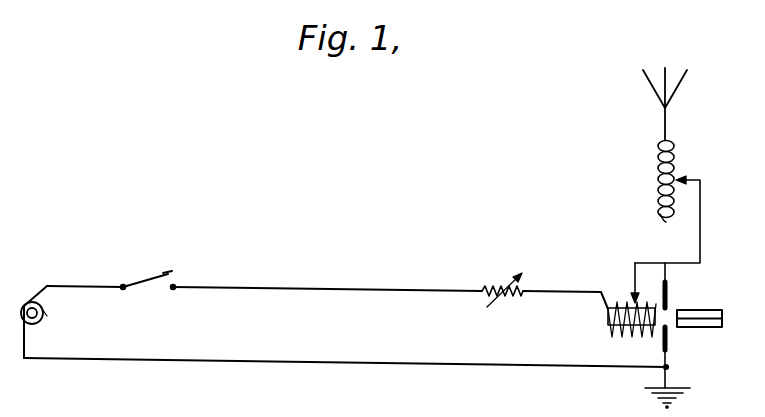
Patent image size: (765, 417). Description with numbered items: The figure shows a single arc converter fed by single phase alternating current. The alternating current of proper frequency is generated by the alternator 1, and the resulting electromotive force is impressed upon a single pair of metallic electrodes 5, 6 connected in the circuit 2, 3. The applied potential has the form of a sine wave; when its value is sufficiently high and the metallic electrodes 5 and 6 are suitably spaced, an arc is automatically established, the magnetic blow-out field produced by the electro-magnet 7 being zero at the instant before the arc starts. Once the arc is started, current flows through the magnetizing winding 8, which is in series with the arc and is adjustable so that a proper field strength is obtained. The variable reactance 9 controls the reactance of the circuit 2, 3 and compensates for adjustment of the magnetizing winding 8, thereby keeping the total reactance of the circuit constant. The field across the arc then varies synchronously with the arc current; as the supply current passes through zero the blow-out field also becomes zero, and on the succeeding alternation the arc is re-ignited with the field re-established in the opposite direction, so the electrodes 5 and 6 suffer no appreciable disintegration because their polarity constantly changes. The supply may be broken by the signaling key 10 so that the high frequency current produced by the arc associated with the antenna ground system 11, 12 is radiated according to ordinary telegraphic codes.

The alternator 1 is at (44, 309).
The circuit 2 is at (340, 288).
The circuit 3 is at (330, 364).
The metallic electrode 5 is at (673, 300).
The metallic electrode 6 is at (673, 341).
The electro-magnet 7 is at (606, 319).
The magnetizing winding 8 is at (620, 300).
The variable reactance 9 is at (500, 286).
The signaling key 10 is at (170, 269).
The antenna 11 is at (670, 68).
The ground 12 is at (688, 386).